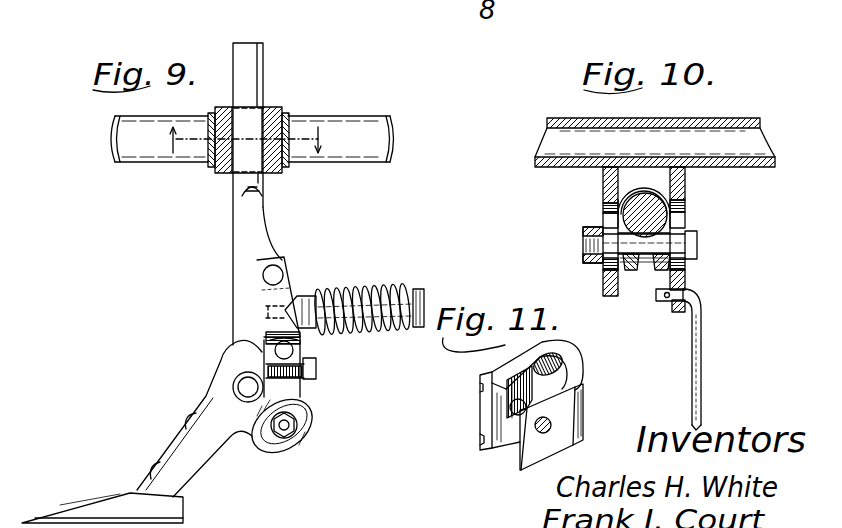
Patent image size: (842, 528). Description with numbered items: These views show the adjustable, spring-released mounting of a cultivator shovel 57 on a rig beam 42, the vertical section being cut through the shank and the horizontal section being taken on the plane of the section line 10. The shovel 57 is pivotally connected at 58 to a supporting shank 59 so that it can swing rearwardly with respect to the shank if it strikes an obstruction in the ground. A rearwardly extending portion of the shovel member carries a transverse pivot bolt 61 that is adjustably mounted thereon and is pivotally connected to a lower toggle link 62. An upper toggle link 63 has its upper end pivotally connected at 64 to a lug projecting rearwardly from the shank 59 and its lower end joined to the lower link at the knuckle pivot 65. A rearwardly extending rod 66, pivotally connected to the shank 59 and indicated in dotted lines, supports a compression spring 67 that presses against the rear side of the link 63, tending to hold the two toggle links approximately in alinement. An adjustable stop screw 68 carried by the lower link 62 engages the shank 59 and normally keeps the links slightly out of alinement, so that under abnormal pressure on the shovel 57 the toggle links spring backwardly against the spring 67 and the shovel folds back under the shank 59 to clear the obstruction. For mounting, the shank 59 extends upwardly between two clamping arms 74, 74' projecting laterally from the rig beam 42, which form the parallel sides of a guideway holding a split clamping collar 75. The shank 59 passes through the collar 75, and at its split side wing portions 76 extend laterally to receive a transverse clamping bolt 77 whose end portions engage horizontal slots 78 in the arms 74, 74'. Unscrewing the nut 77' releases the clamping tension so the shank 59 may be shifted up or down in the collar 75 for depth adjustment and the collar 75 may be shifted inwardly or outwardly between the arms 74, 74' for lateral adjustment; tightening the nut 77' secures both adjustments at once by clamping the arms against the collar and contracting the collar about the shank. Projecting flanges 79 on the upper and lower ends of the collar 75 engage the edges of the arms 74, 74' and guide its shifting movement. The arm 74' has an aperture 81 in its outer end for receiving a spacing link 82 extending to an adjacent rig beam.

In FIG. 9, the section line 10 is at (245, 140).
In FIG. 9, the rig beam 42 is at (385, 166).
In FIG. 10, the rig beam 42 is at (779, 167).
In FIG. 9, the cultivator shovel 57 is at (98, 480).
In FIG. 9, the pivotal connection 58 is at (247, 388).
In FIG. 9, the supporting shank 59 is at (233, 46).
In FIG. 10, the supporting shank 59 is at (605, 214).
In FIG. 9, the transverse pivot bolt 61 is at (276, 448).
In FIG. 9, the lower toggle link 62 is at (264, 377).
In FIG. 9, the upper toggle link 63 is at (289, 303).
In FIG. 9, the pivotal connection 64 is at (277, 272).
In FIG. 9, the knuckle pivot 65 is at (298, 349).
In FIG. 9, the rearwardly extending rod 66 is at (358, 300).
In FIG. 9, the compression spring 67 is at (416, 292).
In FIG. 9, the adjustable stop screw 68 is at (317, 370).
In FIG. 10, the clamping arm 74 is at (587, 231).
In FIG. 10, the clamping arm 74' is at (701, 239).
In FIG. 10, the split clamping collar 75 is at (680, 198).
In FIG. 11, the split clamping collar 75 is at (577, 407).
In FIG. 11, the wing portions 76 is at (522, 433).
In FIG. 10, the transverse clamping bolt 77 is at (677, 241).
In FIG. 10, the nut 77' is at (564, 252).
In FIG. 10, the horizontal slots 78 is at (688, 267).
In FIG. 10, the projecting flanges 79 is at (660, 268).
In FIG. 11, the projecting flanges 79 is at (510, 393).
In FIG. 10, the aperture 81 is at (668, 302).
In FIG. 10, the spacing link 82 is at (704, 366).